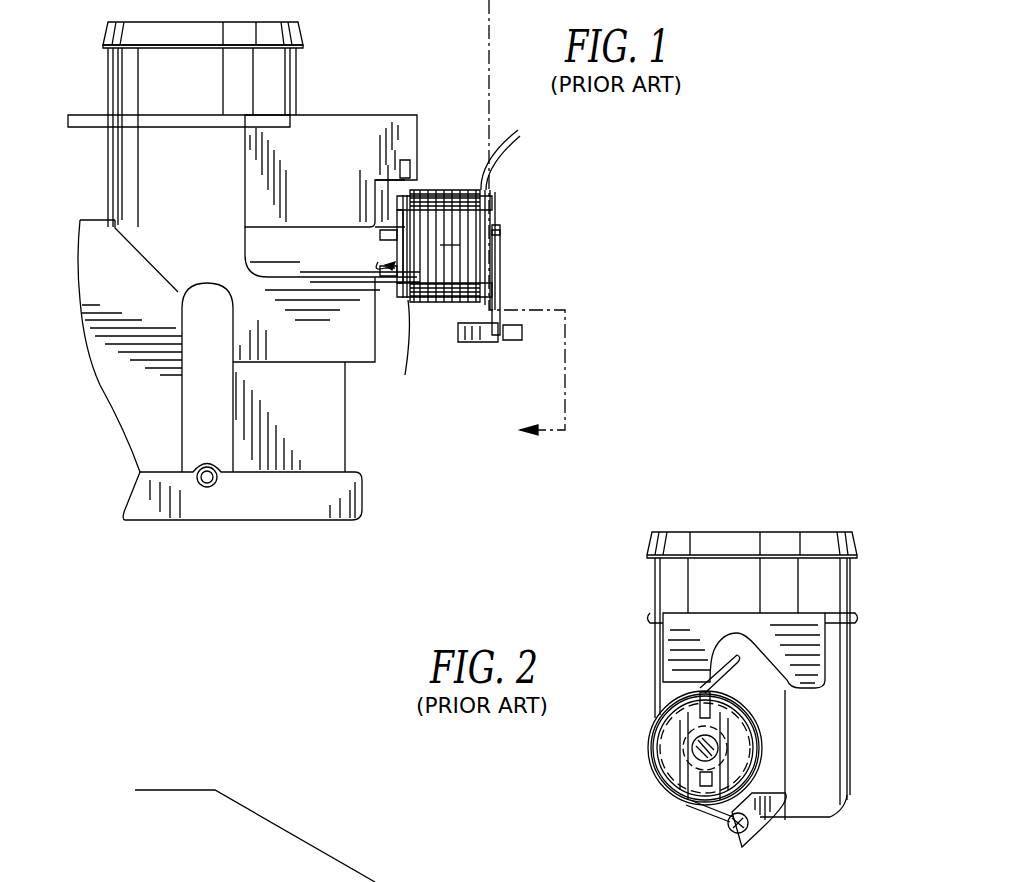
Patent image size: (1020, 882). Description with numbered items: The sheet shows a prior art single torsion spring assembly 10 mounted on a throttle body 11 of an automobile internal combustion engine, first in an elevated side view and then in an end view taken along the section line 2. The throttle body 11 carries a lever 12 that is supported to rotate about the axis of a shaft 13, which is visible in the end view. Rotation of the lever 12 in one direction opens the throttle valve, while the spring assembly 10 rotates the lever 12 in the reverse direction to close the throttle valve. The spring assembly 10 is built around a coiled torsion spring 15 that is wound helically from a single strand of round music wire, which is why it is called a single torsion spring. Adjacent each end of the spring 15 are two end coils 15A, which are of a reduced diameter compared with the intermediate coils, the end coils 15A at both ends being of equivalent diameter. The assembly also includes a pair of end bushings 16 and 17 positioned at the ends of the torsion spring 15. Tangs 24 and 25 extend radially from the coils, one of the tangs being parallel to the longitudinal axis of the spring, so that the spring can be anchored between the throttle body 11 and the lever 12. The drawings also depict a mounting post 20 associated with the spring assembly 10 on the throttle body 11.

In FIG. 1, the section line 2 is at (536, 222).
In FIG. 1, the single torsion spring assembly 10 is at (450, 178).
In FIG. 2, the single torsion spring assembly 10 is at (640, 738).
In FIG. 1, the throttle body 11 is at (318, 115).
In FIG. 2, the throttle body 11 is at (815, 725).
In FIG. 1, the lever 12 is at (497, 300).
In FIG. 2, the lever 12 is at (760, 825).
In FIG. 2, the shaft 13 is at (695, 748).
In FIG. 1, the coiled torsion spring 15 is at (443, 305).
In FIG. 2, the coiled torsion spring 15 is at (672, 797).
In FIG. 1, the end coils 15A is at (469, 255).
In FIG. 1, the end bushing 16 is at (385, 268).
In FIG. 2, the end bushing 16 is at (200, 881).
In FIG. 1, the end bushing 17 is at (492, 206).
In FIG. 2, the end bushing 17 is at (664, 781).
In FIG. 1, the mounting post 20 is at (500, 230).
In FIG. 2, the mounting post 20 is at (690, 802).
In FIG. 1, the tang 24 is at (495, 328).
In FIG. 2, the tang 24 is at (730, 812).
In FIG. 1, the tang 25 is at (376, 183).
In FIG. 2, the tang 25 is at (728, 674).